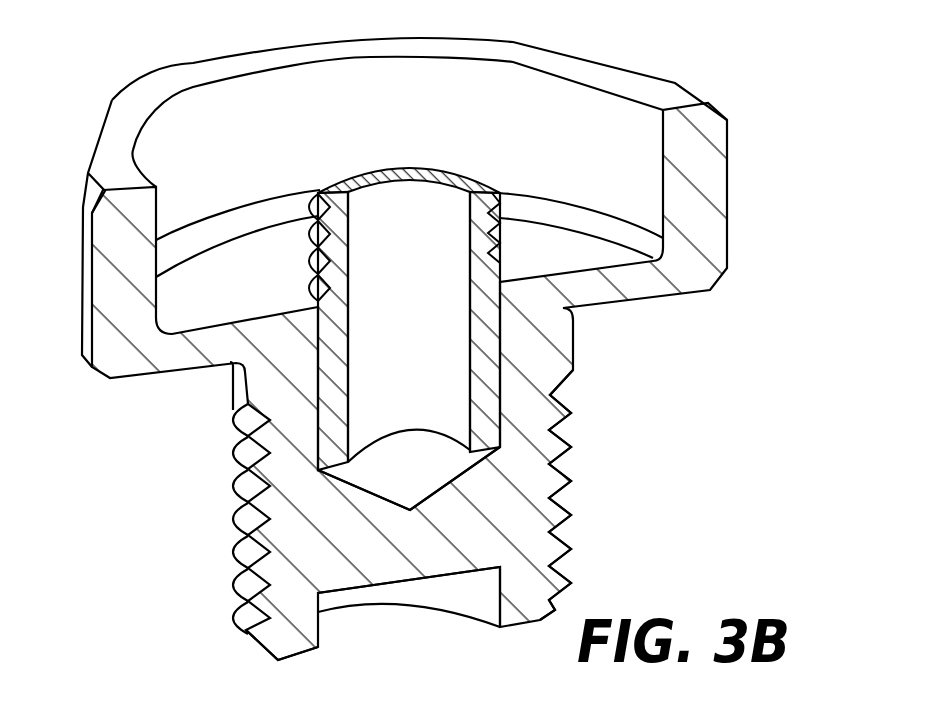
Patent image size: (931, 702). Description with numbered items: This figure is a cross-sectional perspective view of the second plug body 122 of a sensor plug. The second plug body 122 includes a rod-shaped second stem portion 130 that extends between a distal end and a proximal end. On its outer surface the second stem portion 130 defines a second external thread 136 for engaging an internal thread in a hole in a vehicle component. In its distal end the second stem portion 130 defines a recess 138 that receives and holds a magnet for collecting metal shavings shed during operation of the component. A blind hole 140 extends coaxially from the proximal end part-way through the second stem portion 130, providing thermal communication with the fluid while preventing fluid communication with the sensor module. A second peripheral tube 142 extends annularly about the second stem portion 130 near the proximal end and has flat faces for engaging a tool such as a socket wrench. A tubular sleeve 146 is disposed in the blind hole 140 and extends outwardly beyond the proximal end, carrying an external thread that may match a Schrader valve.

The second plug body 122 is at (134, 70).
The second peripheral tube 142 is at (720, 183).
The second stem portion 130 is at (537, 352).
The second external thread 136 is at (568, 477).
The recess 138 is at (320, 610).
The blind hole 140 is at (318, 378).
The tubular sleeve 146 is at (337, 325).